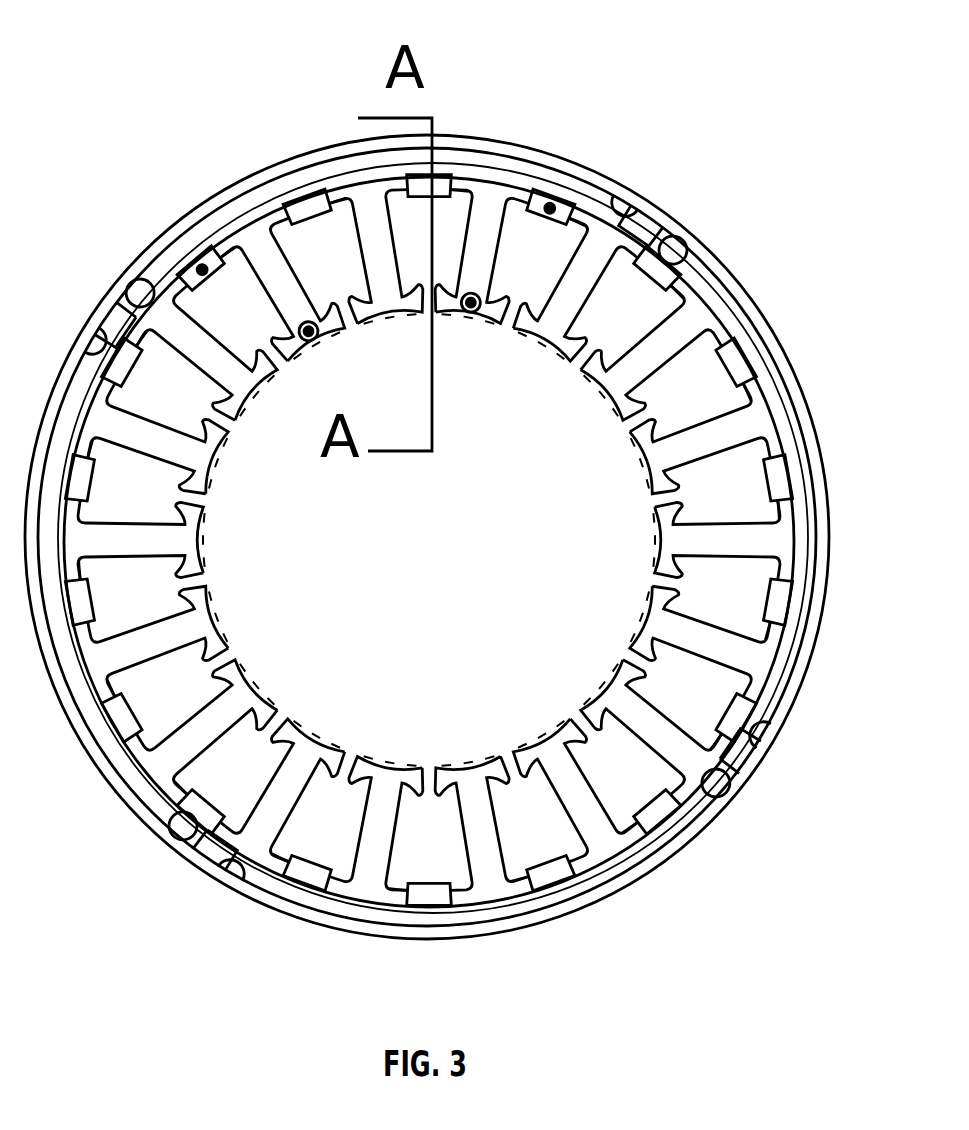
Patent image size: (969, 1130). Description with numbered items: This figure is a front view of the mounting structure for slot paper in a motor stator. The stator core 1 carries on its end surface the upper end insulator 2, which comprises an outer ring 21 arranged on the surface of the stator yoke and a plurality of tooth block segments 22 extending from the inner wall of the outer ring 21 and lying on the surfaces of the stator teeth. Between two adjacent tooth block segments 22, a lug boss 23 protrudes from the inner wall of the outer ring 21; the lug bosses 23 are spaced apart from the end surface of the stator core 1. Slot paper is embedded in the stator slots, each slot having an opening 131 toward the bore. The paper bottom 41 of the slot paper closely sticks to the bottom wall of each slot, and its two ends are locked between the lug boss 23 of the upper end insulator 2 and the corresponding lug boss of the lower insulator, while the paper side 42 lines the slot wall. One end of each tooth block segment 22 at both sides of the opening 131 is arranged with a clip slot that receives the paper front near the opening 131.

The stator core 1 is at (260, 182).
The upper end insulator 2 is at (360, 185).
The outer ring 21 is at (503, 187).
The tooth block segments 22 is at (590, 258).
The lug boss 23 is at (443, 183).
The paper bottom 41 is at (572, 218).
The paper side 42 is at (645, 252).
The opening 131 is at (512, 315).